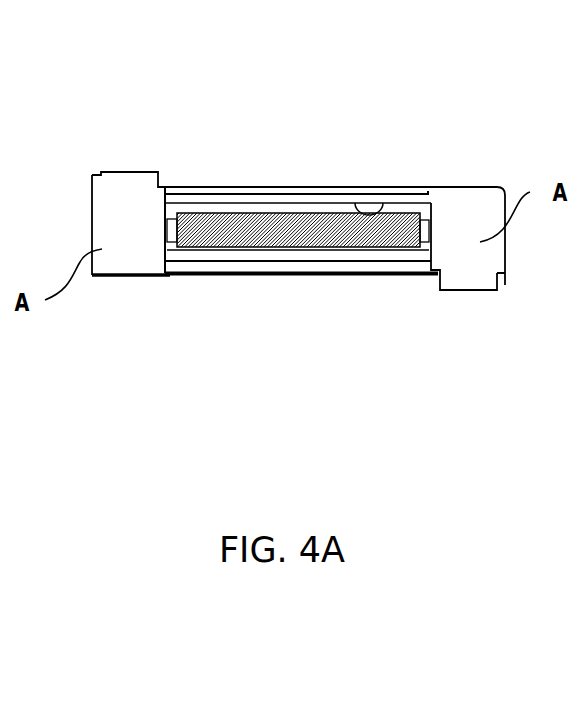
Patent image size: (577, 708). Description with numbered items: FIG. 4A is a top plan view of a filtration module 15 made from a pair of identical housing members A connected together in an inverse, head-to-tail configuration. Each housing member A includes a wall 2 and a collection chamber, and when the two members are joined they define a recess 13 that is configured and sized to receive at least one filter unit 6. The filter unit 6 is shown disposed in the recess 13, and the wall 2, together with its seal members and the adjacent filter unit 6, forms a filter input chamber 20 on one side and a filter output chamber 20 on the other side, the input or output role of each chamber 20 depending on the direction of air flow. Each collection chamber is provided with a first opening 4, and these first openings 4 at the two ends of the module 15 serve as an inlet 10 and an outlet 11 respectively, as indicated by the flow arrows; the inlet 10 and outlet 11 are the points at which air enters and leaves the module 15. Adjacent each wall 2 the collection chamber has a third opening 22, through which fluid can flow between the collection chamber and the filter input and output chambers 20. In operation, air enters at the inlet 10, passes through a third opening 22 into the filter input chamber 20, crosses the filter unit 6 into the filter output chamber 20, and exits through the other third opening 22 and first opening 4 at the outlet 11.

The filtration module 15 is at (251, 110).
The inlet 10 is at (163, 272).
The outlet 11 is at (437, 193).
The first opening 4 is at (158, 174).
The filter input chamber or filter output chamber 20 is at (275, 192).
The wall 2 is at (266, 236).
The third opening 22 is at (388, 197).
The recess 13 is at (380, 212).
The filter unit 6 is at (318, 246).